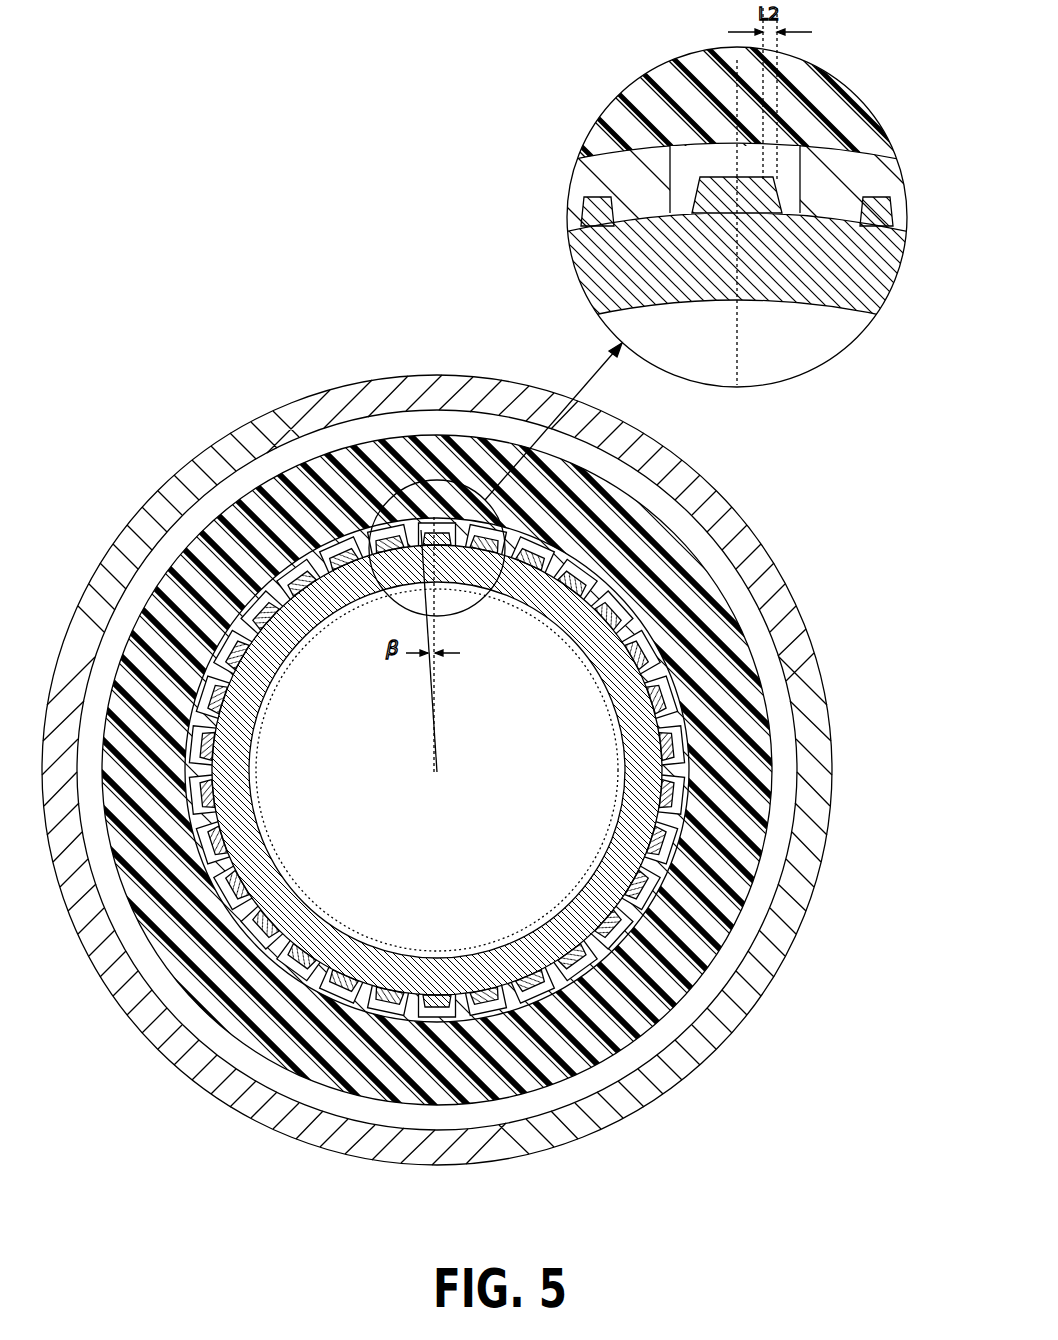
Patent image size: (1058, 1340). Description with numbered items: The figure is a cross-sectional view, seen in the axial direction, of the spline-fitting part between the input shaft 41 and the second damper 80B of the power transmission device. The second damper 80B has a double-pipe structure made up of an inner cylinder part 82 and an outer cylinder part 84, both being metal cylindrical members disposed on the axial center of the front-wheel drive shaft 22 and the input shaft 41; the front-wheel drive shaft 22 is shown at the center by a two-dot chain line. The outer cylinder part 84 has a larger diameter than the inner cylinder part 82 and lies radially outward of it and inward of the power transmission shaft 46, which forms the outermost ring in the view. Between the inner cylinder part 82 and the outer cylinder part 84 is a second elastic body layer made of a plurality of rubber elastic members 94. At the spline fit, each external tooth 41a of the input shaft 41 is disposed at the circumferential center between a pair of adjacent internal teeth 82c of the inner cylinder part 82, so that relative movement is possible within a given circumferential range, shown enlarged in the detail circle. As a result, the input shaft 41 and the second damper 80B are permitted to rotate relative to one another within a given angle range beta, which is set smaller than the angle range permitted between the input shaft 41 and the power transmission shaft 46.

The second damper 80B is at (289, 435).
The power transmission shaft 46 is at (402, 380).
The outer cylinder part 84 is at (167, 547).
The elastic member 94 is at (235, 508).
The inner cylinder part 82 is at (265, 737).
The internal tooth 82c is at (640, 640).
The input shaft 41 is at (286, 660).
The external tooth 41a is at (446, 528).
The front-wheel drive shaft 22 is at (272, 842).